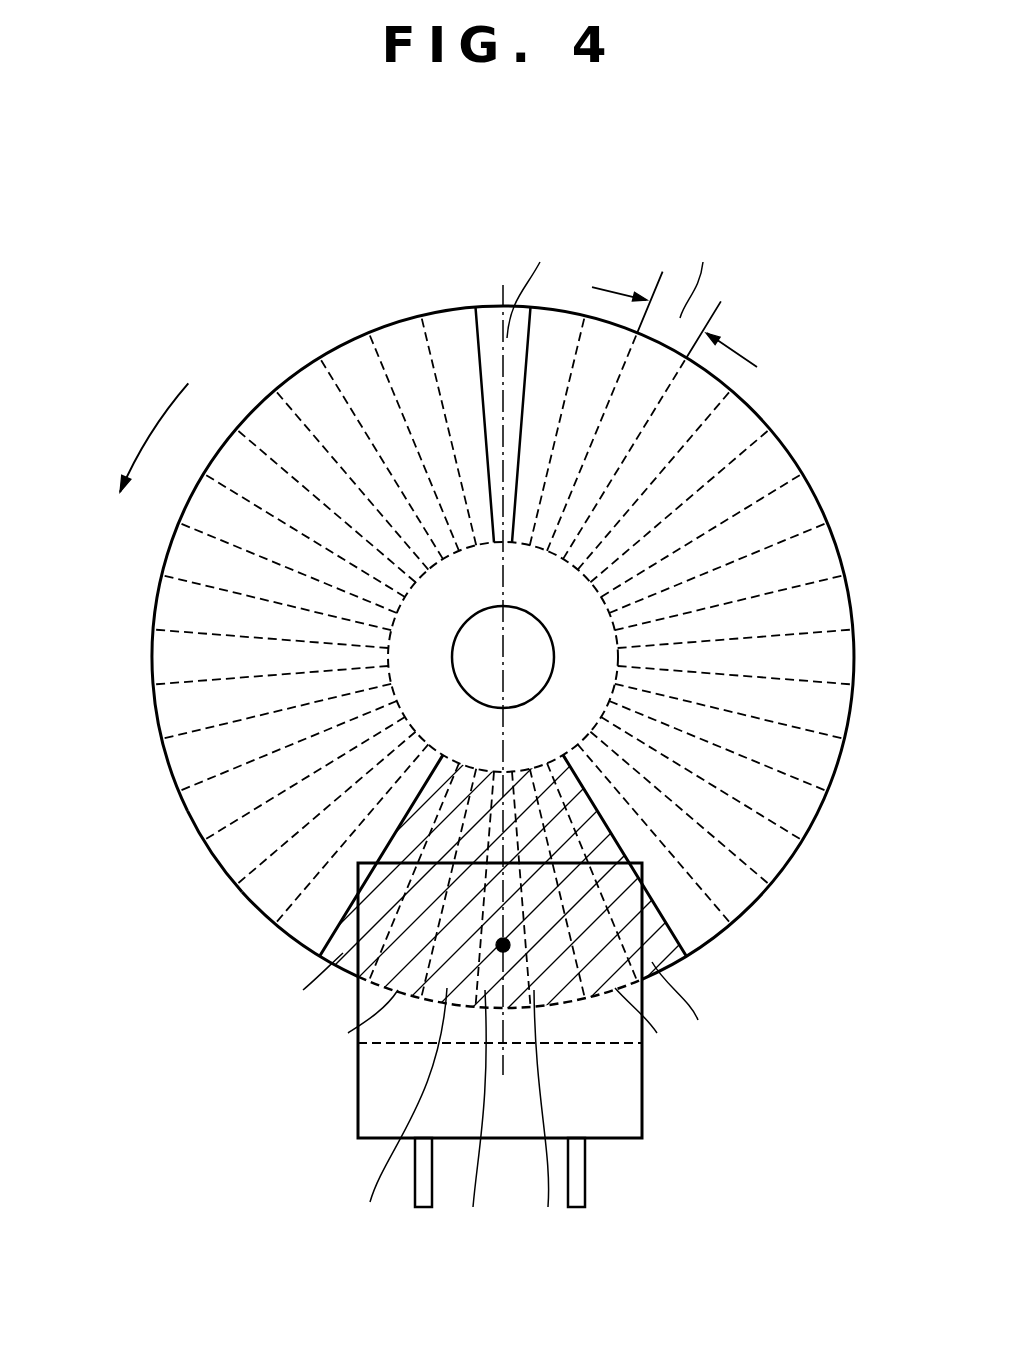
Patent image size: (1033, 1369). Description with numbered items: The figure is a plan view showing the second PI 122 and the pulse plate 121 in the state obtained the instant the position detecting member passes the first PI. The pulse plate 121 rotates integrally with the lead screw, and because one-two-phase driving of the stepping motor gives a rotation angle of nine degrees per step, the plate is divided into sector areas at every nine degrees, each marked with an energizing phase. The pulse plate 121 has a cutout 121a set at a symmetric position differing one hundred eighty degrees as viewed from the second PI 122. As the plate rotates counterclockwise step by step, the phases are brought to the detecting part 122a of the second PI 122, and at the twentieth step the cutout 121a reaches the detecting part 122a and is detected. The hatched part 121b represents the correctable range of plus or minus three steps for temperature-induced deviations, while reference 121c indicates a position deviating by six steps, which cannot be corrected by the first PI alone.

The pulse plate 121 is at (852, 722).
The cutout 121a is at (490, 330).
The hatched part (correctable range) 121b is at (392, 843).
The deviated detection position 121c is at (202, 856).
The second PI (photo-interrupter) 122 is at (358, 1116).
The detecting part 122a is at (505, 947).